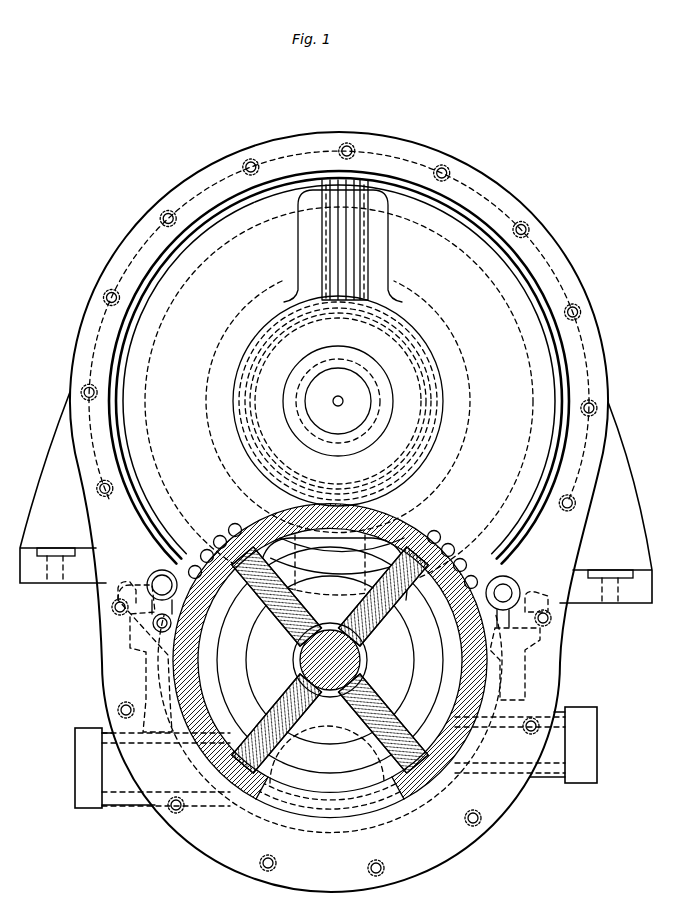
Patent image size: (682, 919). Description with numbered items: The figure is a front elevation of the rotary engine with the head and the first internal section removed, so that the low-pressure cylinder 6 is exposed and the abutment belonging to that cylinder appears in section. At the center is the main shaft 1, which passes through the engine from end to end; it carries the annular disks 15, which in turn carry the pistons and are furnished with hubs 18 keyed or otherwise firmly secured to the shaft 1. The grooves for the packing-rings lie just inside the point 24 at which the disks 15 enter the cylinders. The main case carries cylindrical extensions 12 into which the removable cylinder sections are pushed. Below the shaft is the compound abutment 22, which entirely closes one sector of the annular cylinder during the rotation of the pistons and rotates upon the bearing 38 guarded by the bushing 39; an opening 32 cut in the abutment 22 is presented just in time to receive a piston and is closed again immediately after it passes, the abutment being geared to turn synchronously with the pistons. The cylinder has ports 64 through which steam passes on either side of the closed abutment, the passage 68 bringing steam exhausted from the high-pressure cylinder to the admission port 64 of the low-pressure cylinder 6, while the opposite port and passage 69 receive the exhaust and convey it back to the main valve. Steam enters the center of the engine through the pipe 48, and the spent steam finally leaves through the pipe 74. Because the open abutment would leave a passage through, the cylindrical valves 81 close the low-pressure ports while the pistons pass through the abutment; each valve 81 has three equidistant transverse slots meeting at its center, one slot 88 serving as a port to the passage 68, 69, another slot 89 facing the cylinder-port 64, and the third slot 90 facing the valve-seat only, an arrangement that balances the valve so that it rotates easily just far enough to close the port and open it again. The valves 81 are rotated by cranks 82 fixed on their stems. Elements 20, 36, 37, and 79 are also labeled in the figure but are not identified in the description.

The extensions 12 is at (212, 165).
The shaft channel 20 is at (322, 200).
The channel wall 79 is at (306, 250).
The annular disks 15 is at (297, 332).
The hubs 18 is at (358, 352).
The main shaft 1 is at (338, 401).
The disk entry point 24 is at (237, 435).
The low-pressure cylinders 6 is at (339, 401).
The bearing cap 37 is at (395, 520).
The cylinder port 64 is at (212, 527).
The abutment 22 is at (255, 527).
The gear housing flange 36 is at (415, 542).
The slot 89 is at (475, 566).
The cylindrical valve 81 is at (160, 572).
The slot 90 is at (528, 592).
The crank 82 is at (150, 612).
The slot 88 is at (543, 626).
The port and passage 69 is at (150, 655).
The passage 68 is at (560, 650).
The bearing 38 is at (300, 660).
The bushing 39 is at (367, 663).
The pipe 48 is at (75, 770).
The pipe 74 is at (597, 762).
The opening 32 is at (330, 772).